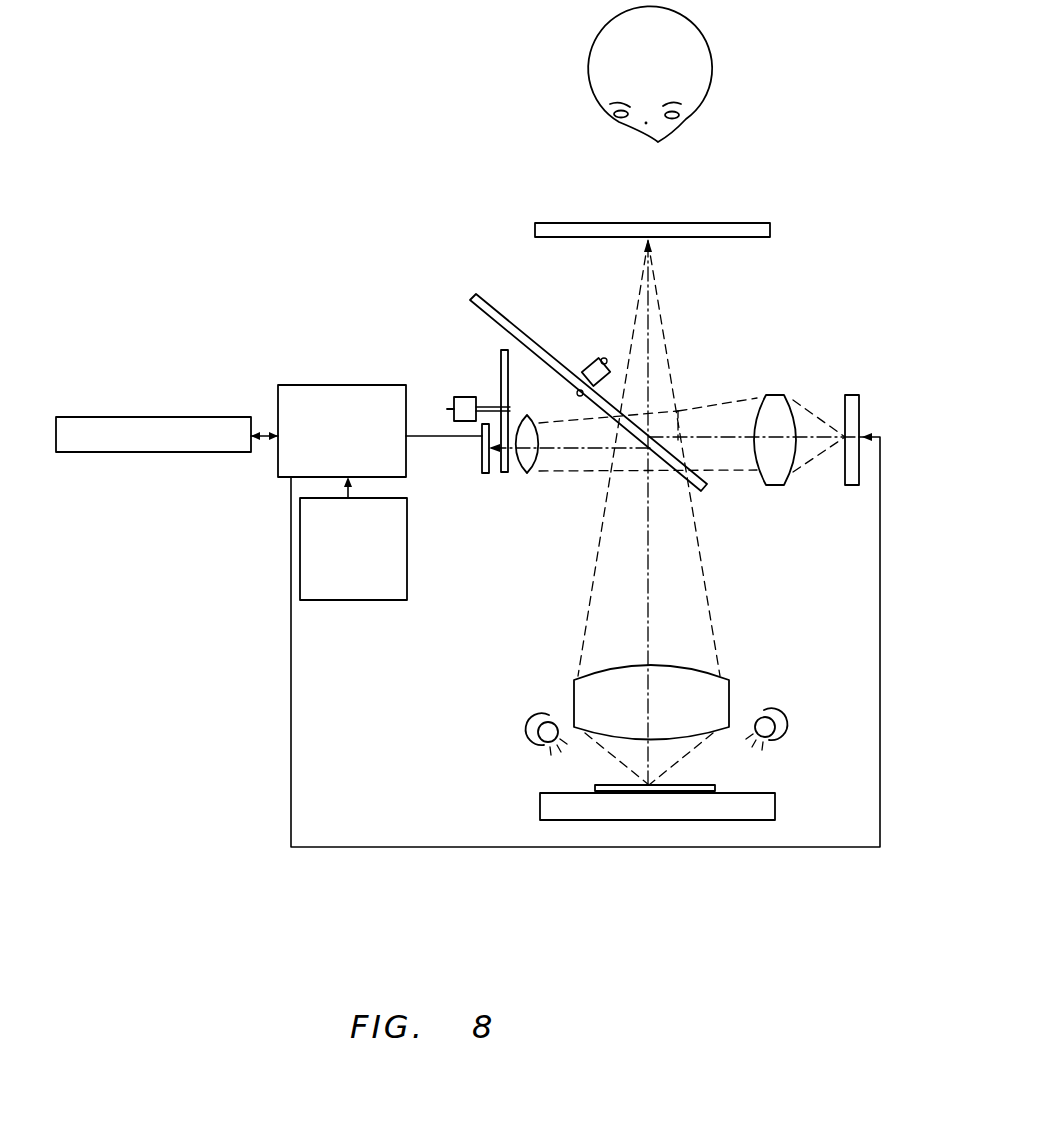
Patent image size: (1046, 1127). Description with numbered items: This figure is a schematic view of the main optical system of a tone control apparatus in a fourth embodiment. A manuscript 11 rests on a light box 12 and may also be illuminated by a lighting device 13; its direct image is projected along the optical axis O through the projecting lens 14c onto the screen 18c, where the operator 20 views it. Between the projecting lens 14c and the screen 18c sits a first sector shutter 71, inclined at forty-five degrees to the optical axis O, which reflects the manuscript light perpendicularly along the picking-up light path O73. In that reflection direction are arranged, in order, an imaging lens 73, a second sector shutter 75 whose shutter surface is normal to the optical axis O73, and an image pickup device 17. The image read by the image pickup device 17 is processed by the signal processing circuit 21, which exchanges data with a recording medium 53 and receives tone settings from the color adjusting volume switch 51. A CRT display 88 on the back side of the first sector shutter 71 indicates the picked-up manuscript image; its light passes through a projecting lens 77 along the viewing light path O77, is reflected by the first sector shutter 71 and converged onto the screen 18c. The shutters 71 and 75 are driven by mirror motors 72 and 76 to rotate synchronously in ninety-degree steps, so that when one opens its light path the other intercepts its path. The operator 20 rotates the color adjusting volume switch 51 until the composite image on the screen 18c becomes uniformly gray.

The operator 20 is at (710, 82).
The screen 18c is at (770, 230).
The first sector shutter 71 is at (493, 312).
The mirror motor 72 is at (593, 358).
The second sector shutter 75 is at (501, 352).
The mirror motor 76 is at (456, 397).
The image pickup device 17 is at (486, 475).
The imaging lens 73 is at (531, 473).
The optical axis of the imaging lens O73 is at (586, 452).
The optical axis of the projecting lens O77 is at (713, 436).
The projecting lens 77 is at (774, 394).
The CRT display 88 is at (852, 394).
The recording medium 53 is at (222, 416).
The signal processing circuit 21 is at (317, 385).
The color adjusting volume switch 51 is at (313, 604).
The optical axis O is at (649, 617).
The projecting lens 14c is at (728, 696).
The lighting device 13 is at (538, 727).
The manuscript 11 is at (595, 790).
The light box 12 is at (552, 808).